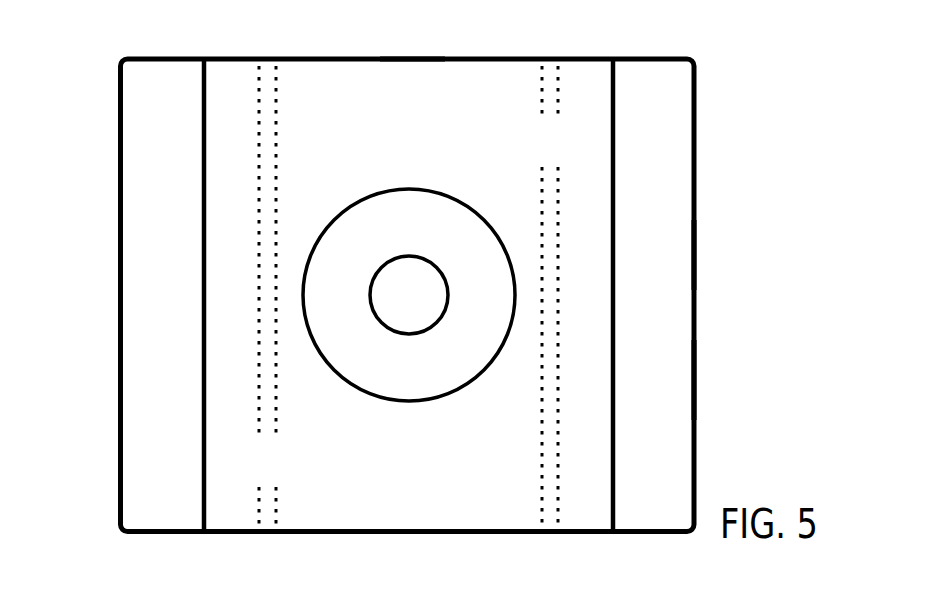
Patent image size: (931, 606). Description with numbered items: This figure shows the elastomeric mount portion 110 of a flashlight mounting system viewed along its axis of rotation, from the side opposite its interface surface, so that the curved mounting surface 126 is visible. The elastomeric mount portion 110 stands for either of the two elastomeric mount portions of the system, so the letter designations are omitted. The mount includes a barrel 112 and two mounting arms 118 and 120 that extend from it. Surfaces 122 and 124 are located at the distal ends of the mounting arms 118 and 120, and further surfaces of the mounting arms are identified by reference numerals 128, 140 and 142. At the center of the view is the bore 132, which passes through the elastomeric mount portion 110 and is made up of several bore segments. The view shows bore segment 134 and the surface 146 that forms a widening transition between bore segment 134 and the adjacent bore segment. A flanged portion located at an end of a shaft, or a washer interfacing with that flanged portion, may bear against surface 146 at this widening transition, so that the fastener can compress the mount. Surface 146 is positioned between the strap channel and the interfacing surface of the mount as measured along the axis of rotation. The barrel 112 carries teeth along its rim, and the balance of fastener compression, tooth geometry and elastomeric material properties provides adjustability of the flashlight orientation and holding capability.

The elastomeric mount portion 110 is at (716, 40).
The barrel 112 is at (330, 7).
The mounting arm 118 is at (143, 122).
The mounting arm 120 is at (688, 253).
The surface 122 is at (176, 172).
The surface 124 is at (668, 174).
The curved mounting surface 126 is at (280, 474).
The surface of mounting arms 128 is at (111, 380).
The bore 132 is at (423, 306).
The bore segment 134 is at (413, 181).
The surface of mounting arms 140 is at (430, 542).
The surface of mounting arms 142 is at (429, 50).
The surface 146 is at (409, 297).